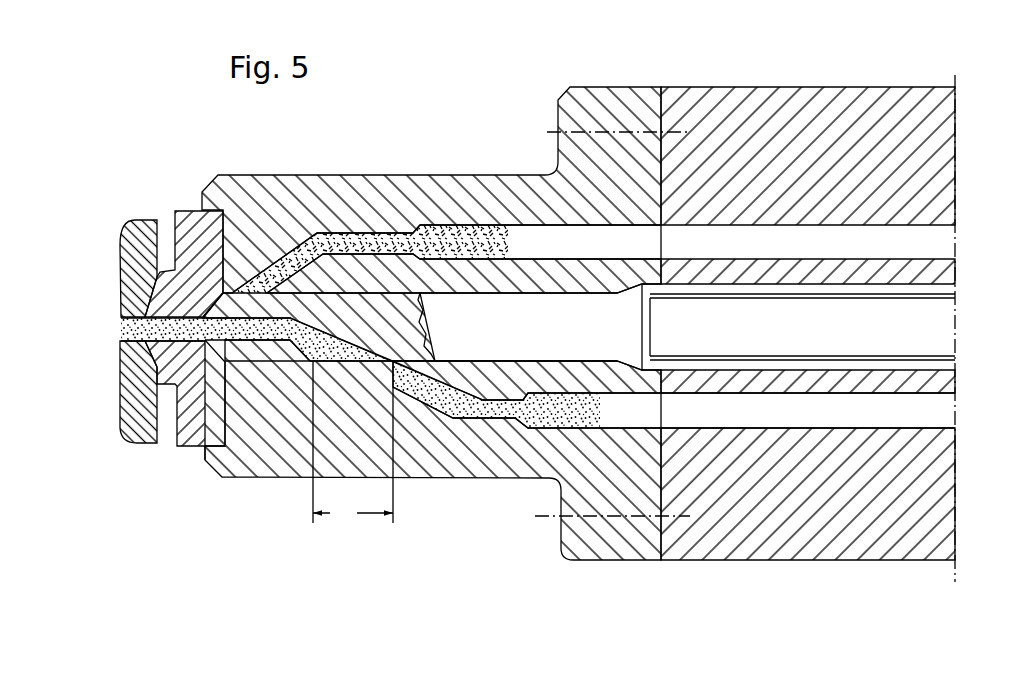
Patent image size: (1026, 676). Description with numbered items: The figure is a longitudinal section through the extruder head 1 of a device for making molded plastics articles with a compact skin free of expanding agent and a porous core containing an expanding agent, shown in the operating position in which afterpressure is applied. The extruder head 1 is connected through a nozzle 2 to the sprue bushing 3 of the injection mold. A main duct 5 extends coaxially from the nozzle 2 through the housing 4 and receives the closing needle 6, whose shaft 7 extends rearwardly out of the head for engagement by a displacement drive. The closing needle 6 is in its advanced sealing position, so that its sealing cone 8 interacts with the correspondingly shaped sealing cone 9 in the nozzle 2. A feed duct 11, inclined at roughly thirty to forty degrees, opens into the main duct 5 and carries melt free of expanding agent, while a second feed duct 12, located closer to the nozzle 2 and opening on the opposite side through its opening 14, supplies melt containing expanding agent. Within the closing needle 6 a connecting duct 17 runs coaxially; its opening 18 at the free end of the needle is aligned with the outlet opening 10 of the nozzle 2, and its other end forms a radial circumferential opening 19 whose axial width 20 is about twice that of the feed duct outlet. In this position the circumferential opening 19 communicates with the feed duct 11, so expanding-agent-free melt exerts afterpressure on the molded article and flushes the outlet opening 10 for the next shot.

The extruder head 1 is at (470, 166).
The nozzle 2 is at (182, 418).
The sprue bushing 3 is at (132, 375).
The housing 4 is at (427, 200).
The main duct 5 is at (263, 352).
The closing needle 6 is at (390, 310).
The shaft 7 is at (888, 318).
The sealing cone 8 is at (238, 363).
The sealing cone 9 is at (207, 310).
The outlet opening 10 is at (170, 327).
The feed duct 11 is at (478, 413).
The feed duct 12 is at (340, 240).
The opening 14 is at (252, 292).
The connecting duct 17 is at (230, 288).
The opening 18 is at (217, 346).
The circumferential opening 19 is at (342, 362).
The axial width 20 is at (353, 443).